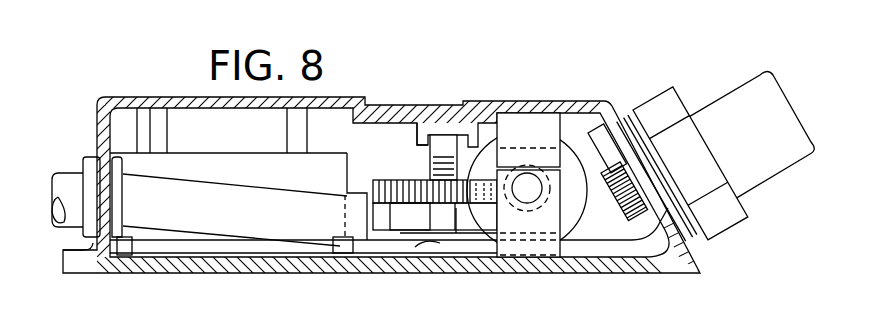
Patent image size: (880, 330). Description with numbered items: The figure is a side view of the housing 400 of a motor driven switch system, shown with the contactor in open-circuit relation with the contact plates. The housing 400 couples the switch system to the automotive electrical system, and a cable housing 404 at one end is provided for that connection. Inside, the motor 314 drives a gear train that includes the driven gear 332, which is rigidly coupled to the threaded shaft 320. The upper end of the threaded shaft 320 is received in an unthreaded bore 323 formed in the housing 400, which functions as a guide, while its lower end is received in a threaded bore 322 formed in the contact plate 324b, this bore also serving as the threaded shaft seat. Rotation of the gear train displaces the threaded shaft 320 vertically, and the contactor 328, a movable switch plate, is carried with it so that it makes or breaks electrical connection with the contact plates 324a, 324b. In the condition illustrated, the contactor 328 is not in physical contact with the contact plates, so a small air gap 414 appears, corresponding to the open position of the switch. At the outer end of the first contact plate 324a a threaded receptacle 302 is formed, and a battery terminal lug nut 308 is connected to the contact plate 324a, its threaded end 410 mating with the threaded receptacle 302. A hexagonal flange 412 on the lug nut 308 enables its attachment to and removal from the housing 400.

The housing 400 is at (506, 102).
The cable housing 404 is at (230, 221).
The unthreaded bore 323 is at (462, 84).
The threaded shaft 320 is at (432, 158).
The driven gear 332 is at (397, 178).
The threaded bore 322 is at (432, 240).
The contactor 328 is at (412, 217).
The contact plate 324b is at (455, 240).
The air gap 414 is at (478, 213).
The motor 314 is at (572, 162).
The contact plate 324a is at (613, 247).
The threaded end 410 is at (622, 206).
The threaded receptacle 302 is at (608, 128).
The battery terminal lug nut 308 is at (770, 150).
The hexagonal flange 412 is at (720, 220).